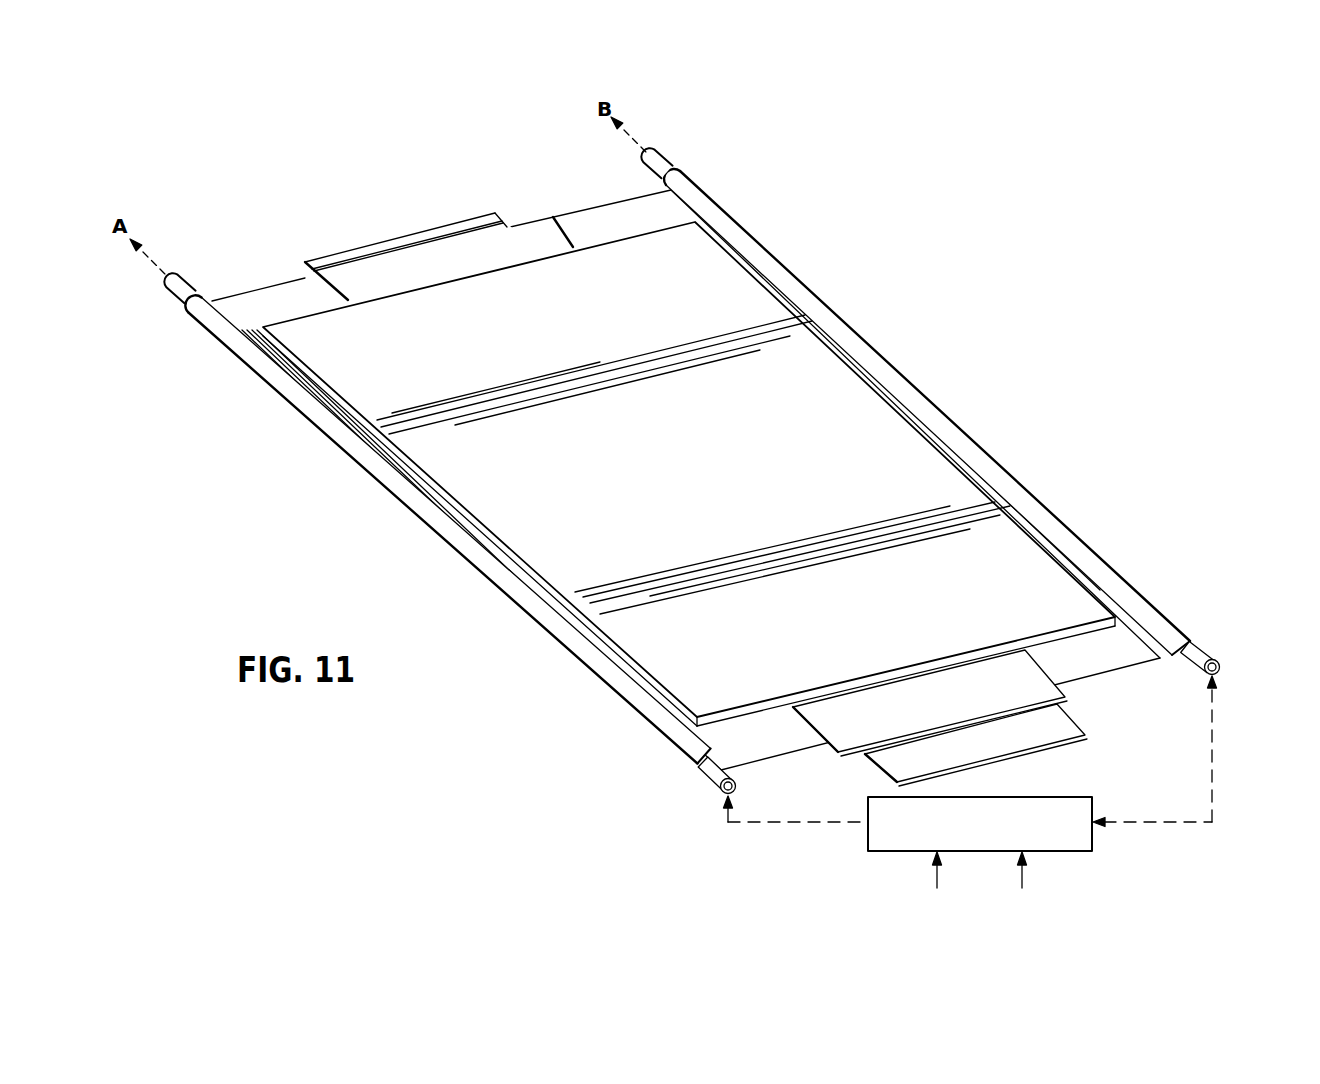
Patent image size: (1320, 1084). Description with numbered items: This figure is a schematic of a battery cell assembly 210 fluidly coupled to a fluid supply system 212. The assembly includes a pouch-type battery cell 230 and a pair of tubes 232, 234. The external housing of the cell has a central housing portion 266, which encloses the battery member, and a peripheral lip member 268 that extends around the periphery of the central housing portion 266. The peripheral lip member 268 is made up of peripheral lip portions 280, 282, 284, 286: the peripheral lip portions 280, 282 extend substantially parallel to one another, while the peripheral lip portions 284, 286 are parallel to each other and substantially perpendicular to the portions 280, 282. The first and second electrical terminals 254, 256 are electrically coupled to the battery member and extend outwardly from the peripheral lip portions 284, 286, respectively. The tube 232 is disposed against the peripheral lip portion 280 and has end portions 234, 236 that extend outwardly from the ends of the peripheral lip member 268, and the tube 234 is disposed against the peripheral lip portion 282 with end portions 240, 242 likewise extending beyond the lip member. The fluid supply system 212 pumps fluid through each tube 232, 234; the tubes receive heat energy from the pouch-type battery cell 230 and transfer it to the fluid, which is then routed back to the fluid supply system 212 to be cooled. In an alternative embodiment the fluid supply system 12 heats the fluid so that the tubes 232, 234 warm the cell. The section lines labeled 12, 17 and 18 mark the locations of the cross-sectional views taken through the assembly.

The fluid supply system 12 is at (378, 492).
The section line 17- 17 is at (568, 668).
The section line 18- 18 is at (1033, 552).
The battery cell assembly 210 is at (975, 426).
The fluid supply system 212 is at (1094, 850).
The pouch-type battery cell 230 is at (836, 377).
The tube 232 is at (716, 796).
The tube 234 is at (703, 768).
The end portion 236 is at (228, 283).
The end portion 240 is at (1178, 657).
The end portion 242 is at (662, 158).
The first electrical terminal 254 is at (1023, 727).
The second electrical terminal 256 is at (410, 245).
The central housing portion 266 is at (782, 325).
The peripheral lip member 268 is at (615, 702).
The peripheral lip portion 280 is at (520, 606).
The peripheral lip portion 282 is at (1012, 470).
The peripheral lip portion 284 is at (598, 222).
The peripheral lip portion 286 is at (1108, 660).